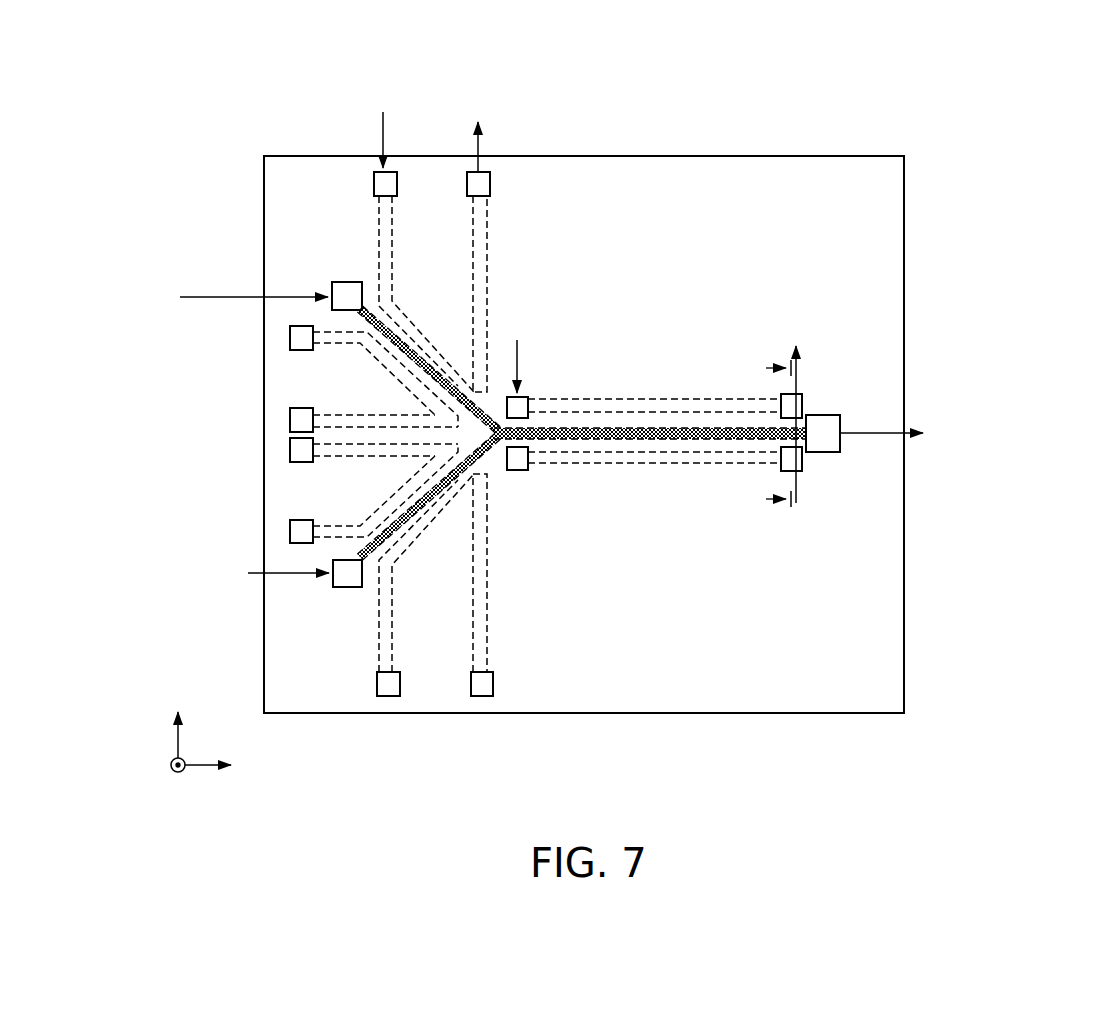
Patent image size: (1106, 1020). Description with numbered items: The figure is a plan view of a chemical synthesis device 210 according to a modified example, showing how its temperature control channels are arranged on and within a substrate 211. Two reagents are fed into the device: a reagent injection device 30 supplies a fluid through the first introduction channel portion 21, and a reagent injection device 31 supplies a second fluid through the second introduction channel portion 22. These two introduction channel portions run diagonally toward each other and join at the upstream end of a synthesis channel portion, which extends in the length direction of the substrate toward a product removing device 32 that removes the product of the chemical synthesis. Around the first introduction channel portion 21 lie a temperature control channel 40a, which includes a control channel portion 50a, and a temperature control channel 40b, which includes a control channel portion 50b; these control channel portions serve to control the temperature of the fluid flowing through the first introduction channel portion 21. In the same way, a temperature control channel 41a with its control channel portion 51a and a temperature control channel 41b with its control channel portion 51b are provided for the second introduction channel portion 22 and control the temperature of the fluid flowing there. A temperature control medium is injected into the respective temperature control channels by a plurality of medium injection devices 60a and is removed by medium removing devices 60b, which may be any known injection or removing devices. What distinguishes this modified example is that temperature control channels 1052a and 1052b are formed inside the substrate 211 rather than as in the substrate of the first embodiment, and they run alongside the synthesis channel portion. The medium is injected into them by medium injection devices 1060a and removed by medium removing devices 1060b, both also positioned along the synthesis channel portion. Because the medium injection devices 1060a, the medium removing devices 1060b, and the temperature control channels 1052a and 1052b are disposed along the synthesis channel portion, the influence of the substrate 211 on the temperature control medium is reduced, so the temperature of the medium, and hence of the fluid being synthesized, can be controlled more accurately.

The chemical synthesis device 210 is at (1015, 93).
The substrate 211 is at (872, 153).
The first introduction channel portion 21 is at (378, 308).
The second introduction channel portion 22 is at (378, 568).
The reagent injection device 30 is at (341, 286).
The reagent injection device 31 is at (346, 588).
The product removing device 32 is at (826, 428).
The temperature control channel 40a is at (376, 241).
The temperature control channel 40b is at (362, 352).
The temperature control channel 41a is at (375, 626).
The temperature control channel 41b is at (377, 502).
The control channel portion 50a is at (443, 336).
The control channel portion 50b is at (430, 410).
The control channel portion 51a is at (445, 553).
The control channel portion 51b is at (435, 462).
The medium injection device 60a is at (388, 184).
The medium removing device 60b is at (480, 184).
The temperature control channel 1052a is at (620, 398).
The temperature control channel 1052b is at (620, 465).
The medium injection device 1060a is at (528, 410).
The medium removing device 1060b is at (782, 407).